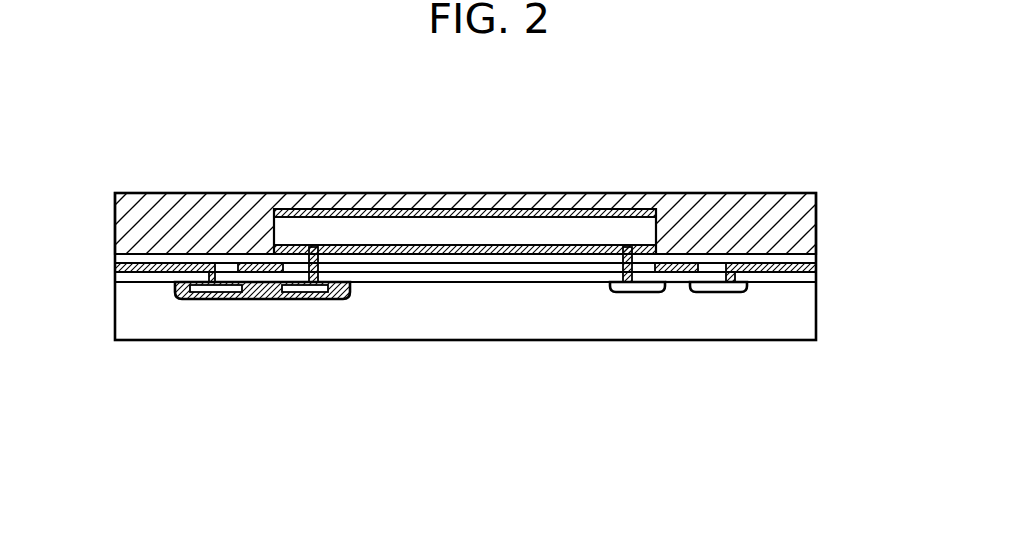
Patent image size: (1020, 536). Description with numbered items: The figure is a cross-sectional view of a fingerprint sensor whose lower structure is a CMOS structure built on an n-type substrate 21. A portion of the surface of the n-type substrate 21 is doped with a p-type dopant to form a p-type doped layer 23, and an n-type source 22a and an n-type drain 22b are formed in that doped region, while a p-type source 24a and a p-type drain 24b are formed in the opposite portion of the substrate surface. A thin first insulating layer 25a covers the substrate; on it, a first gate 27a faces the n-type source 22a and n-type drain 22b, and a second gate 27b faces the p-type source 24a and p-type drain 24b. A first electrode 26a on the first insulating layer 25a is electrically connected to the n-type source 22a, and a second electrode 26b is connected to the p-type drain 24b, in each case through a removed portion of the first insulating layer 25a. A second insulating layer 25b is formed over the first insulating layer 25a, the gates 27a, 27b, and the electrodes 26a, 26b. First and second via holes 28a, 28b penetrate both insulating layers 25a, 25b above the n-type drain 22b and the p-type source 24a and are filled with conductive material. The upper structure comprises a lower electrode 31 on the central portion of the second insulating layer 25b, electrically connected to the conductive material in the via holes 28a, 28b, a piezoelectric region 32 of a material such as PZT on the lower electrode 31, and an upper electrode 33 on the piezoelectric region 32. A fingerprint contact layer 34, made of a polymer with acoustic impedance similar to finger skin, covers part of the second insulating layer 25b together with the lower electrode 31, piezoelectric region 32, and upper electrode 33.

The n-type substrate 21 is at (808, 322).
The n-type source 22a is at (213, 299).
The n-type drain 22b is at (297, 299).
The p-type doped layer 23 is at (185, 299).
The p-type source 24a is at (633, 292).
The p-type drain 24b is at (715, 292).
The first insulating layer 25a is at (808, 281).
The second insulating layer 25b is at (808, 255).
The first electrode 26a is at (115, 265).
The second electrode 26b is at (808, 268).
The first gate 27a is at (259, 272).
The second gate 27b is at (672, 283).
The first via hole 28a is at (311, 249).
The second via hole 28b is at (627, 256).
The lower electrode 31 is at (507, 250).
The piezoelectric region 32 is at (459, 228).
The upper electrode 33 is at (411, 214).
The fingerprint contact layer 34 is at (808, 215).